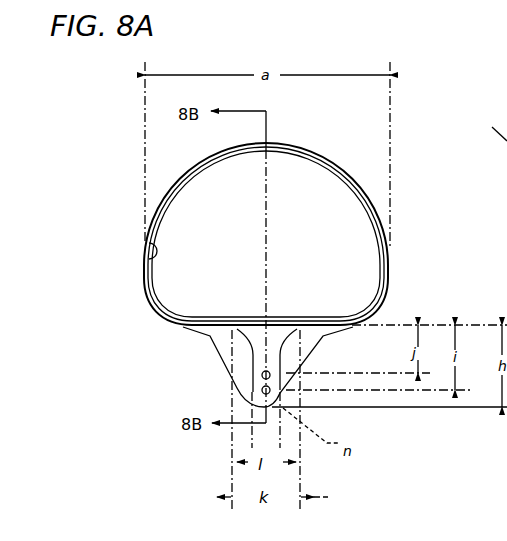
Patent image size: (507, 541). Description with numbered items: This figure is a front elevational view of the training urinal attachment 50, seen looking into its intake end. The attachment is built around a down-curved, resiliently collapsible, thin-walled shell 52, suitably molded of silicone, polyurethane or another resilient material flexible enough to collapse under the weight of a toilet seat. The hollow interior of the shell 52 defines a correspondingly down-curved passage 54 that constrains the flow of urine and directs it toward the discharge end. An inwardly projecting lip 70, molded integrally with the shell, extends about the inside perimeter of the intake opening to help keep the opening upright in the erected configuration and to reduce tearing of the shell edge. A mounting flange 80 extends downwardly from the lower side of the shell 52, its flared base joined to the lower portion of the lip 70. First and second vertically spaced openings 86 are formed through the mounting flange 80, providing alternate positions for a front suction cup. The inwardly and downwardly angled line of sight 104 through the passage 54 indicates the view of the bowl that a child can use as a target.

The training urinal attachment 50 is at (104, 205).
The shell 52 is at (383, 206).
The passage 54 is at (314, 187).
The lip 70 is at (149, 244).
The mounting flange 80 is at (252, 361).
The openings 86 is at (257, 398).
The line of sight 104 is at (498, 187).